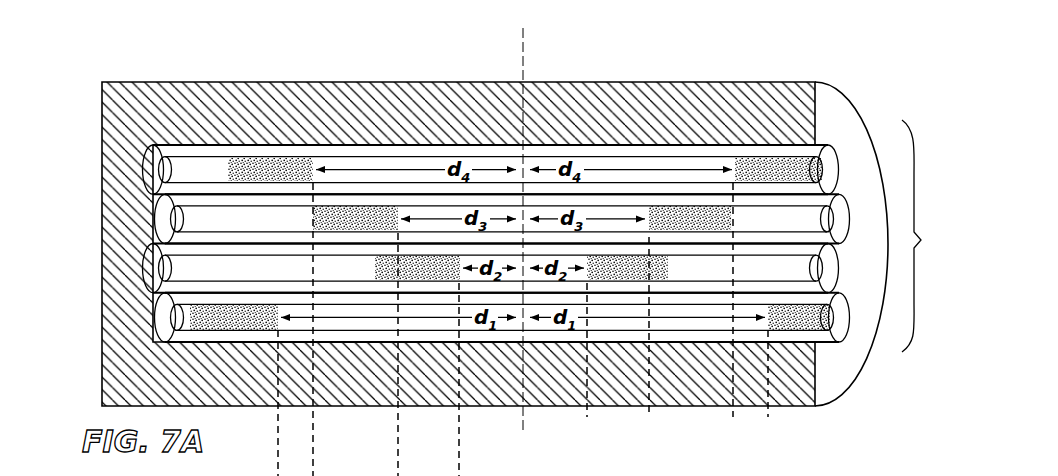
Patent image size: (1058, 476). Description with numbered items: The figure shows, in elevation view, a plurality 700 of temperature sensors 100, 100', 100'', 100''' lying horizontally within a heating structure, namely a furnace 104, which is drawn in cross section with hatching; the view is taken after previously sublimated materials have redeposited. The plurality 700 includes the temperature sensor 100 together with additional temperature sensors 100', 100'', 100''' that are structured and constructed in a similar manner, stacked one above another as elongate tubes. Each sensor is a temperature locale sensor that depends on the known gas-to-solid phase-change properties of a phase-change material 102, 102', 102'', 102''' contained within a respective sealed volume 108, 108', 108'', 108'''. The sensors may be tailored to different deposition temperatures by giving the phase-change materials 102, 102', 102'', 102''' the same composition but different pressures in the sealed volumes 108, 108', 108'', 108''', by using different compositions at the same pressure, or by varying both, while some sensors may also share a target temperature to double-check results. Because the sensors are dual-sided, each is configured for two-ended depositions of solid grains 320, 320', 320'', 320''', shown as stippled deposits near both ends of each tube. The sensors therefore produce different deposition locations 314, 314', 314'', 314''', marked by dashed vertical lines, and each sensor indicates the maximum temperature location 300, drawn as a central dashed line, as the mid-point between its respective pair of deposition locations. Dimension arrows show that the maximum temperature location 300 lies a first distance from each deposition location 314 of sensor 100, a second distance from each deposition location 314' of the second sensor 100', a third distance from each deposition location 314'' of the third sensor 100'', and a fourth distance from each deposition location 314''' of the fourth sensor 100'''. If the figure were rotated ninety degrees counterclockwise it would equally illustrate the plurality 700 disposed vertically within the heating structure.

The furnace 104 is at (838, 97).
The temperature sensor 100 is at (526, 304).
The temperature sensor 100' is at (523, 255).
The temperature sensor 100'' is at (529, 207).
The temperature sensor 100''' is at (521, 158).
The sealed volume 108 is at (120, 316).
The sealed volume 108' is at (123, 266).
The sealed volume 108'' is at (124, 218).
The sealed volume 108''' is at (118, 168).
The phase-change material 102 is at (504, 169).
The phase-change material 102' is at (521, 161).
The phase-change material 102'' is at (522, 119).
The phase-change material 102''' is at (525, 108).
The solid grains 320 is at (504, 169).
The solid grains 320' is at (521, 161).
The solid grains 320'' is at (522, 119).
The solid grains 320''' is at (525, 108).
The maximum temperature location 300 is at (523, 232).
The deposition location 314 is at (537, 403).
The deposition location 314' is at (533, 379).
The deposition location 314'' is at (536, 354).
The deposition location 314''' is at (531, 329).
The plurality of temperature sensors 700 is at (932, 236).